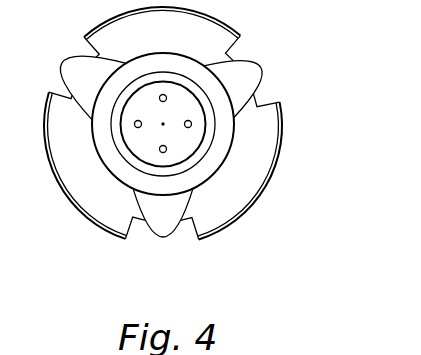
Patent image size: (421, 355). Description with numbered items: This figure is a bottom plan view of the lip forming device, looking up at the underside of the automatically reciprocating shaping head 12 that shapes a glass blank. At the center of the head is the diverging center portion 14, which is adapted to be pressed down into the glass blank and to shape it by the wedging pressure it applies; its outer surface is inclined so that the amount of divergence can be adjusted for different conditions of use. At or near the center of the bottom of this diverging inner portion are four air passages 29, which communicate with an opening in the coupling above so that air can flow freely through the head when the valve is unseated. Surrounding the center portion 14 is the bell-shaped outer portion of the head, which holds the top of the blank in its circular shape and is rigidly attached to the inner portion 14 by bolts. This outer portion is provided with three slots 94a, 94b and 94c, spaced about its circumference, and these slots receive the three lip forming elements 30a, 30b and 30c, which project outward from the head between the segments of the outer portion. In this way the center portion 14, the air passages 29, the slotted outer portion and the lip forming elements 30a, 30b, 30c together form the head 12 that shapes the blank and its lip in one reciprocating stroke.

The shaping head 12 is at (264, 181).
The diverging center portion 14 is at (233, 143).
The air passages 29 is at (160, 152).
The lip forming element 30a is at (165, 222).
The lip forming element 30b is at (248, 75).
The lip forming element 30c is at (82, 67).
The slot 94a is at (140, 223).
The slot 94b is at (260, 92).
The slot 94c is at (65, 90).